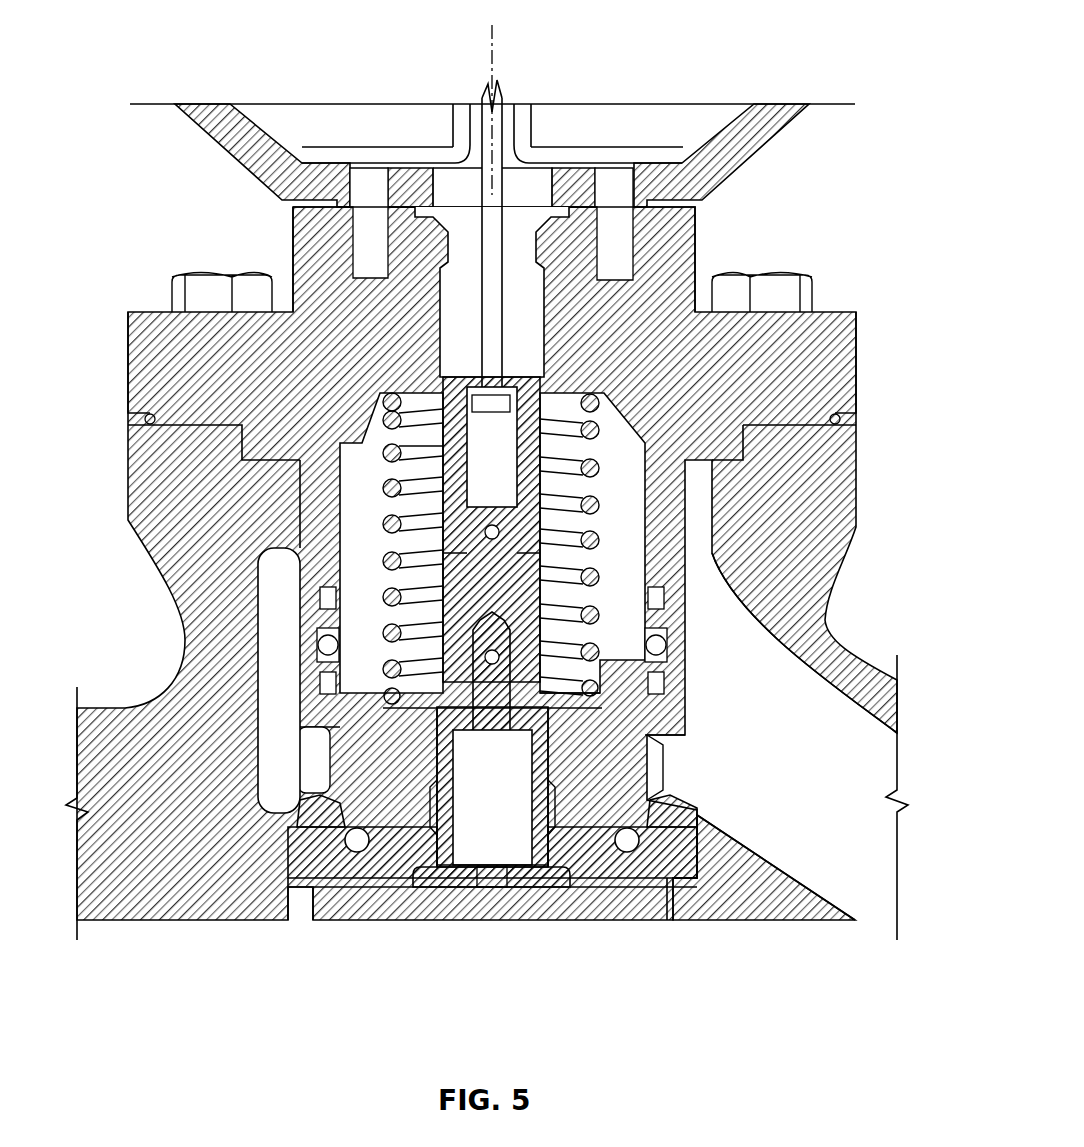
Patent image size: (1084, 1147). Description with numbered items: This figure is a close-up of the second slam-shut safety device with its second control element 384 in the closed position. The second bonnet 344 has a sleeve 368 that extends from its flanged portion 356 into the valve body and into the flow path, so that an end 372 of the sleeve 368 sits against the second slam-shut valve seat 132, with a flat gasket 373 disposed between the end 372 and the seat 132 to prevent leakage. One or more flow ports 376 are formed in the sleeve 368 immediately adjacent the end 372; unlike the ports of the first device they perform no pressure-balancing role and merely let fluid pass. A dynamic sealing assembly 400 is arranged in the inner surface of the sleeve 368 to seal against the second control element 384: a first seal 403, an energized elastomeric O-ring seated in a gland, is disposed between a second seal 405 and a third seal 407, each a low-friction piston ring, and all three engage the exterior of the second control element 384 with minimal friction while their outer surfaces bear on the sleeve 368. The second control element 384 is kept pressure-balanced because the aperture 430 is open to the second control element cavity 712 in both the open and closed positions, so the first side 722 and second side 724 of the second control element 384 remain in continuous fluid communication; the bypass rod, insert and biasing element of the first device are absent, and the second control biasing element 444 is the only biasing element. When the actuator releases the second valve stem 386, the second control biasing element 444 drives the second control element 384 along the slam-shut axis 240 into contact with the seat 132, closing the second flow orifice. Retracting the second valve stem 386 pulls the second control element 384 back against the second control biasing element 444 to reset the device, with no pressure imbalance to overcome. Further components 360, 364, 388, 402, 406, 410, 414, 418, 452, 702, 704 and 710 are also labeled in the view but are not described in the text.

The second slam-shut valve seat 132 is at (640, 870).
The slam-shut axis 240 is at (495, 42).
The second bonnet 344 is at (730, 240).
The flanged portion 356 is at (128, 372).
The bonnet 360 is at (293, 240).
The nut 364 is at (172, 305).
The sleeve 368 is at (690, 530).
The end of the sleeve 372 is at (668, 800).
The flat gasket 373 is at (680, 835).
The flow ports 376 is at (660, 727).
The second control element 384 is at (327, 830).
The second valve stem 386 is at (480, 148).
The seat ring 388 is at (432, 890).
The dynamic sealing assembly 400 is at (297, 652).
The plug 402 is at (465, 888).
The first seal 403 is at (318, 622).
The second seal 405 is at (320, 600).
The plug head 406 is at (405, 790).
The third seal 407 is at (285, 662).
The plug body 410 is at (405, 790).
The spring guide 414 is at (585, 395).
The bearing 418 is at (627, 618).
The aperture 430 is at (528, 880).
The second control biasing element 444 is at (379, 395).
The packing 452 is at (545, 305).
The spring 702 is at (533, 428).
The spring 704 is at (440, 578).
The wall 710 is at (570, 760).
The second control element cavity 712 is at (607, 657).
The first side of the second control element 722 is at (600, 555).
The second side of the second control element 724 is at (604, 712).